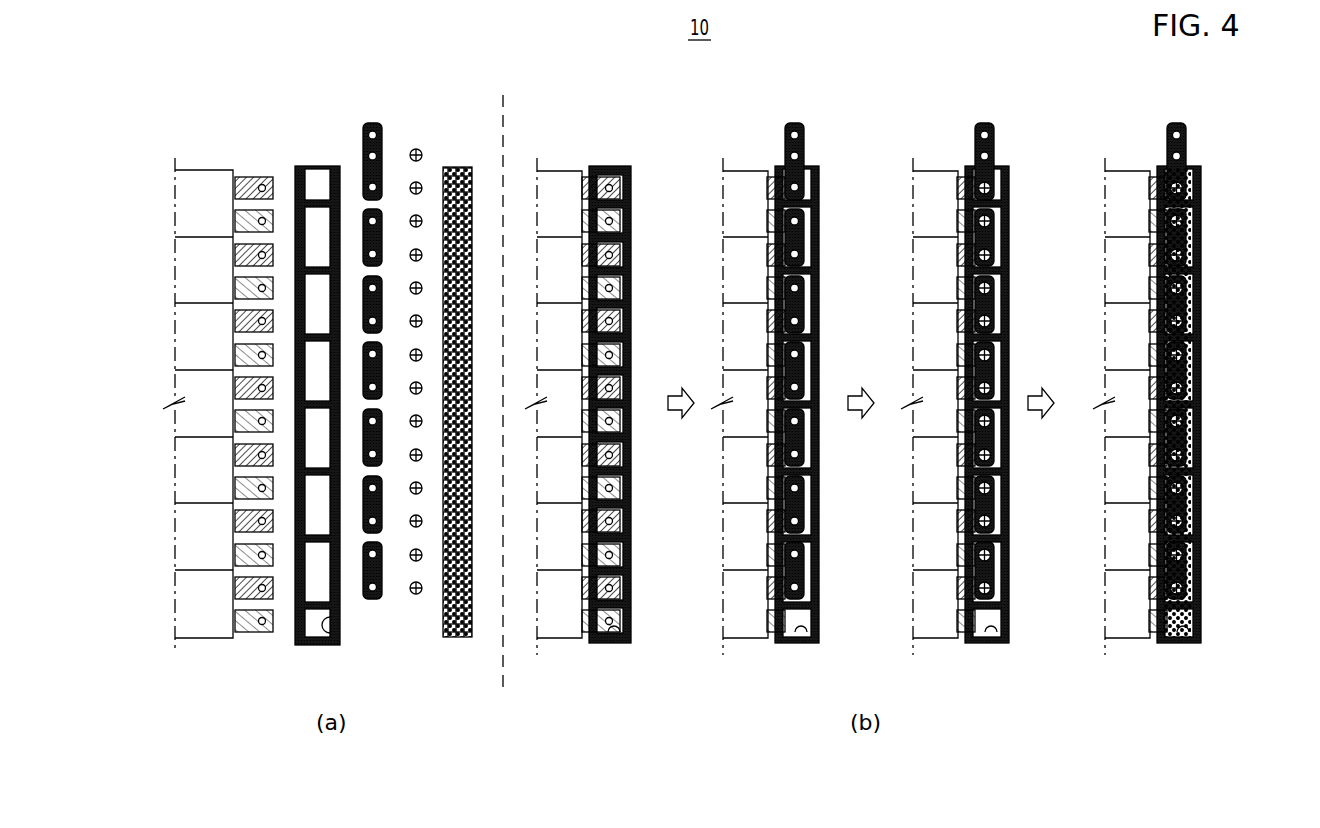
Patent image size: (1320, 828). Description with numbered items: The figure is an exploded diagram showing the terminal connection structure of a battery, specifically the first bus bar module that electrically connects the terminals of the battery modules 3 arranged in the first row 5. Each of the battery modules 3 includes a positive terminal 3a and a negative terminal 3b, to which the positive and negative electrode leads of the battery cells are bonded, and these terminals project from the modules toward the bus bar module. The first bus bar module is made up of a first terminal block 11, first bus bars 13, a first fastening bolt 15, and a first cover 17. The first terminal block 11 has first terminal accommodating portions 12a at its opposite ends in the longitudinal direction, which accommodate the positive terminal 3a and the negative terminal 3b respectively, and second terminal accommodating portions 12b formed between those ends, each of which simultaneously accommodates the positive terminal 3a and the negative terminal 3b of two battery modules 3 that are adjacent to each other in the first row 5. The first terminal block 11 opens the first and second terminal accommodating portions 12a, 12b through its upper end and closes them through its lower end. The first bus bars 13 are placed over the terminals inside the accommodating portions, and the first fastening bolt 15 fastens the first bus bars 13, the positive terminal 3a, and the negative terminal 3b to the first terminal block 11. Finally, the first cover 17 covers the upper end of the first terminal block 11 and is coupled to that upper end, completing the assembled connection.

The battery module 3 is at (185, 340).
The positive terminal 3a is at (238, 190).
The negative terminal 3b is at (238, 224).
The first row 5 is at (207, 166).
The first terminal block 11 is at (757, 395).
The first terminal accommodating portion 12a is at (319, 175).
The second terminal accommodating portion 12b is at (308, 235).
The first bus bar 13 is at (383, 228).
The first fastening bolt 15 is at (418, 186).
The first cover 17 is at (457, 638).